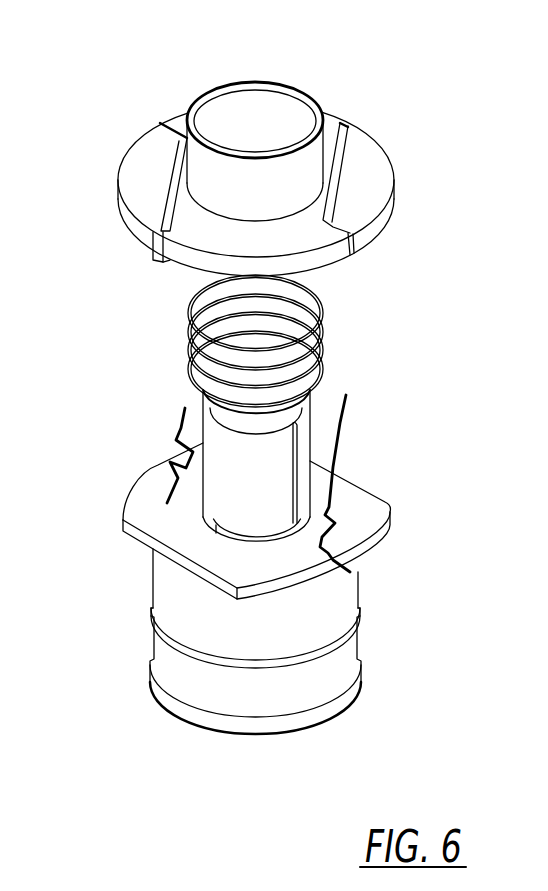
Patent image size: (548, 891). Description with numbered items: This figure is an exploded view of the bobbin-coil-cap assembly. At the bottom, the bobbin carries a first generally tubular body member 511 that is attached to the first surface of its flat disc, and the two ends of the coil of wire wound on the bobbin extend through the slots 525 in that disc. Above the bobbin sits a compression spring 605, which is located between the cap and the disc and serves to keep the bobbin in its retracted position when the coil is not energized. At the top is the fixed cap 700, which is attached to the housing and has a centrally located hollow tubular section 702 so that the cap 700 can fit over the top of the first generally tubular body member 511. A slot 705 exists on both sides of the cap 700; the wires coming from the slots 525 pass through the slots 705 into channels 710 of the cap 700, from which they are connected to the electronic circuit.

The fixed cap 700 is at (248, 144).
The hollow tubular section 702 is at (255, 83).
The slot 705 is at (343, 125).
The channel 710 is at (333, 170).
The compression spring 605 is at (323, 318).
The first generally tubular body member 511 is at (227, 505).
The slot 525 is at (171, 464).